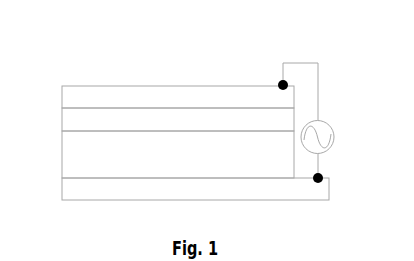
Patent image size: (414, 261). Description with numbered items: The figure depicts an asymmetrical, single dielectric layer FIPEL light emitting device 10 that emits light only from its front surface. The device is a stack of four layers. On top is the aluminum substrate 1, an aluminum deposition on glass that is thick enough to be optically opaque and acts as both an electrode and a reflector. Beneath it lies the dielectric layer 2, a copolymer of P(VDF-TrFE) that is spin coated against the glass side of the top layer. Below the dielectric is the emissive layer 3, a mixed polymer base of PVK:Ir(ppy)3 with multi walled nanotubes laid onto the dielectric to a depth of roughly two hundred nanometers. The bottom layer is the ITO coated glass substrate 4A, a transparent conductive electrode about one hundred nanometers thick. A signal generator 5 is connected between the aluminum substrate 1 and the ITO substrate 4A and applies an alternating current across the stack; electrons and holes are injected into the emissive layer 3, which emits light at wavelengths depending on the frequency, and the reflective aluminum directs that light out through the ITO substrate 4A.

The organic light emitting device 10 is at (129, 44).
The aluminum substrate 1 is at (56, 96).
The dielectric layer 2 is at (55, 119).
The emissive layer 3 is at (55, 155).
The ITO coated glass substrate 4A is at (55, 188).
The signal generator 5 is at (345, 137).